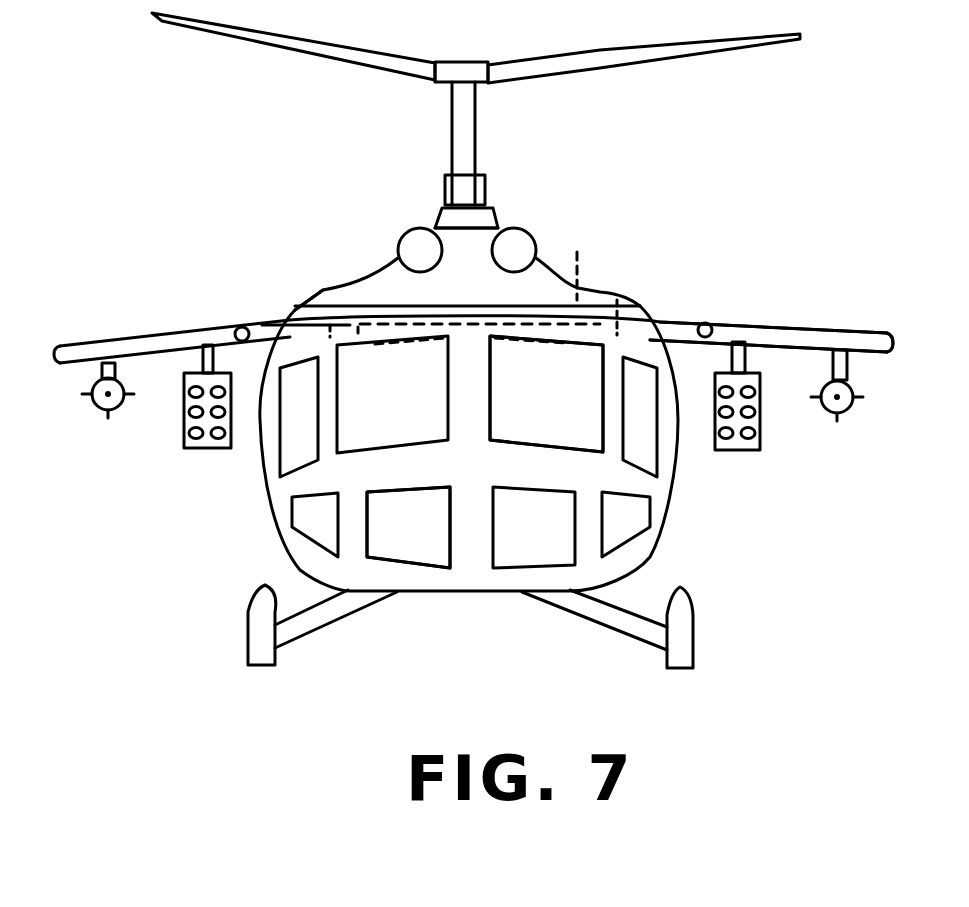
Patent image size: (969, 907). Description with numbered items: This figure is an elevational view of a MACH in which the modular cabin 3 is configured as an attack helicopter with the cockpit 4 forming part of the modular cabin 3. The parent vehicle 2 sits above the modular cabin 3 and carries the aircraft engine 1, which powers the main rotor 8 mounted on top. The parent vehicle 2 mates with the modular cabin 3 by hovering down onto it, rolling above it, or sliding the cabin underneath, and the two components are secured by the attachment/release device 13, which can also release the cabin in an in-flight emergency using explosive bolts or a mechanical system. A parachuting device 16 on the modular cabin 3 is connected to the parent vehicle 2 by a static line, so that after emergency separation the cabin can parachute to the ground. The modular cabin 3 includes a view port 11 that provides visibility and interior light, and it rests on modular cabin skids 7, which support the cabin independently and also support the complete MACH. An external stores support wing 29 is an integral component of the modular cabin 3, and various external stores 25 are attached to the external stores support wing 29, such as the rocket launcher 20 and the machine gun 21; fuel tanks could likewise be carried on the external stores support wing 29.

The aircraft engine 1 is at (514, 250).
The parent vehicle 2 is at (407, 284).
The modular cabin 3 is at (343, 470).
The cockpit 4 is at (577, 430).
The modular cabin skids 7 is at (262, 628).
The main rotor 8 is at (348, 50).
The modular cabin view port 11 is at (412, 532).
The attachment/release device 13 is at (307, 280).
The parachuting device 16 is at (582, 232).
The rocket launcher 20 is at (745, 433).
The machine gun 21 is at (706, 324).
The external stores 25 is at (95, 395).
The external stores support wing 29 is at (797, 338).